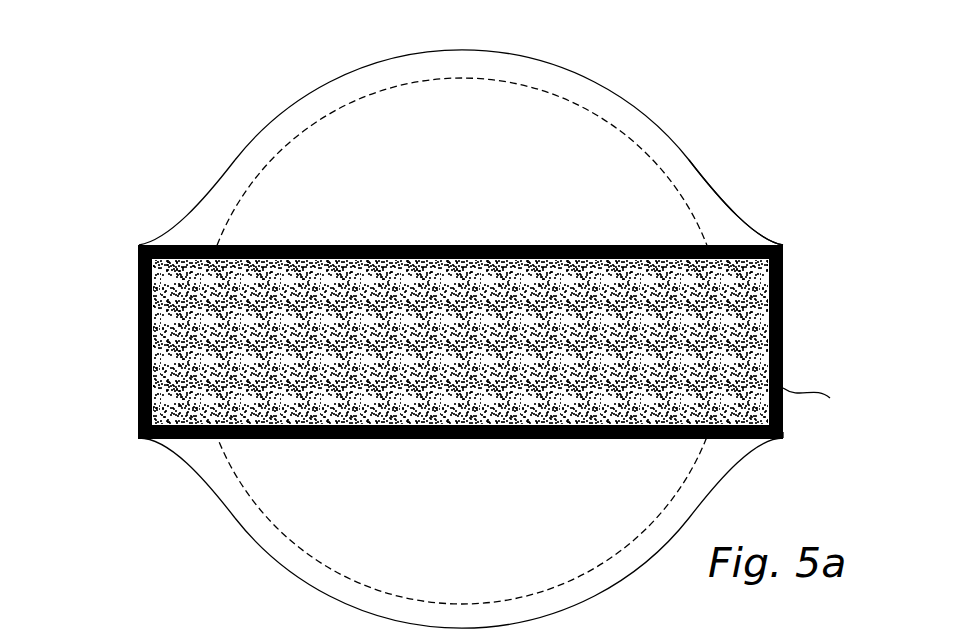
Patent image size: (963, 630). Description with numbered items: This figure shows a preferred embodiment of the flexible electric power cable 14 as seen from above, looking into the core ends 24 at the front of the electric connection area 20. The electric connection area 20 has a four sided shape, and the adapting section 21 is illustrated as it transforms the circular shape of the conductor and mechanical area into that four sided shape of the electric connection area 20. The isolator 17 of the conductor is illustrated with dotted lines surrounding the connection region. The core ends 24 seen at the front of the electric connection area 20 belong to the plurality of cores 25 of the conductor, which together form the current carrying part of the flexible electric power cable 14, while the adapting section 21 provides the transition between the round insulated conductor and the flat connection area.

The flexible electric power cable 14 is at (140, 531).
The isolator 17 is at (672, 155).
The electric connection area 20 is at (783, 318).
The adapting section 21 is at (727, 203).
The core ends 24 is at (825, 413).
The plurality of cores 25 is at (557, 124).